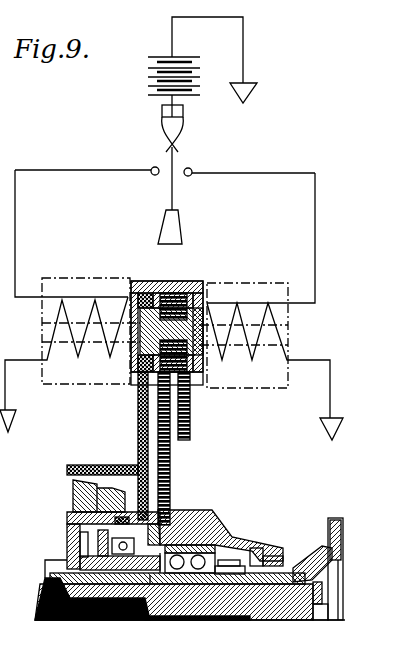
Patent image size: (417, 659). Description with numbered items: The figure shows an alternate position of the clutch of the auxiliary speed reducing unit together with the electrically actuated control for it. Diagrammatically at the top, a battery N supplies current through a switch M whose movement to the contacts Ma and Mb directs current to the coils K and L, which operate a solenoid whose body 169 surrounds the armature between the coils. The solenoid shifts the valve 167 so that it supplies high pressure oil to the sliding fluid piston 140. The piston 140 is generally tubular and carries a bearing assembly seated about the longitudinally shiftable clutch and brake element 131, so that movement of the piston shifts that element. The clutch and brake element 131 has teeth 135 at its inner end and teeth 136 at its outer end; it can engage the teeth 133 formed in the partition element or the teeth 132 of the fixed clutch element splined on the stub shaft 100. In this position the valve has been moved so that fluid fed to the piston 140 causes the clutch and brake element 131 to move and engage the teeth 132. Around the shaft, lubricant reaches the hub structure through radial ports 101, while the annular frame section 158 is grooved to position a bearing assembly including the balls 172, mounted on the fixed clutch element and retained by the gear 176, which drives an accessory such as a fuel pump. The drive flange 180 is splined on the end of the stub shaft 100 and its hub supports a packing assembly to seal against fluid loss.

The battery N is at (138, 78).
The switch M is at (176, 164).
The switch contact Ma is at (152, 175).
The switch contact Mb is at (190, 176).
The coil K is at (77, 303).
The coil L is at (248, 308).
The armature body 169 is at (283, 337).
The valve 167 is at (200, 345).
The fluid piston 140 is at (100, 522).
The teeth 133 is at (80, 547).
The teeth 135 is at (97, 555).
The frame section 158 is at (205, 521).
The balls 172 is at (207, 541).
The gear 176 is at (240, 562).
The drive flange 180 is at (312, 551).
The radial ports 101 is at (75, 621).
The clutch and brake element 131 is at (128, 618).
The teeth 136 is at (157, 585).
The teeth 132 is at (167, 575).
The stub shaft 100 is at (288, 612).